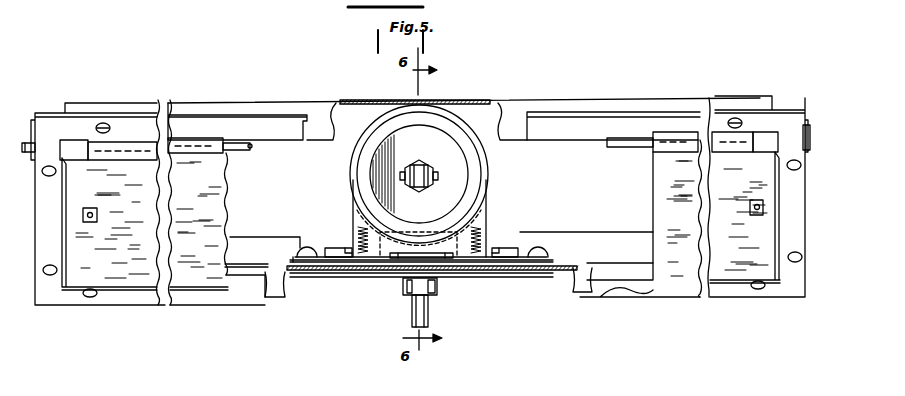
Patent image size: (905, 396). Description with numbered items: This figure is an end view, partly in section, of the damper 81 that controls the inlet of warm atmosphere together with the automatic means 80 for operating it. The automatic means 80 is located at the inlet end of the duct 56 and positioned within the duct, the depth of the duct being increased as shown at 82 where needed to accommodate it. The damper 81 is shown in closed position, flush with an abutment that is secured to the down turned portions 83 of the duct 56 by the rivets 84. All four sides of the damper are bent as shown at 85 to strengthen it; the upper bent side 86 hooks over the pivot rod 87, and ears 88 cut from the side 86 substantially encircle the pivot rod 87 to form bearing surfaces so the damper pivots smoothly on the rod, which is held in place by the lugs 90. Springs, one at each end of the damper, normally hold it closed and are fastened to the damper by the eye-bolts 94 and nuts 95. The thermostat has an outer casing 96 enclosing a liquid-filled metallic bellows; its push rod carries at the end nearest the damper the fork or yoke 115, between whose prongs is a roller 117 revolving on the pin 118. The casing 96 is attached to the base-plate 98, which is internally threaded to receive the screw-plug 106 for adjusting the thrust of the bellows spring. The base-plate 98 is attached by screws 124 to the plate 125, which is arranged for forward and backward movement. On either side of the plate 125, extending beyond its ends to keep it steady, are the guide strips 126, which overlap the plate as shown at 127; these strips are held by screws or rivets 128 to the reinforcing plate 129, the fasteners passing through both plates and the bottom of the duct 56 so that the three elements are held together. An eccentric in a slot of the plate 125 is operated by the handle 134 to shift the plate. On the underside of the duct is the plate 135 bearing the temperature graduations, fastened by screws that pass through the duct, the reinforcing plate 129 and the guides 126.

The duct 56 is at (465, 100).
The automatic means 80 is at (407, 106).
The damper 81 is at (138, 277).
The increased depth portion 82 is at (278, 123).
The down turned portions 83 is at (322, 110).
The rivets 84 is at (105, 123).
The bent sides 85 is at (62, 277).
The upper bent side 86 is at (193, 147).
The pivot rod 87 is at (243, 150).
The ears 88 is at (60, 140).
The lugs 90 is at (31, 125).
The eye-bolts 94 is at (97, 213).
The nuts 95 is at (91, 220).
The outer casing 96 is at (493, 160).
The base-plate 98 is at (357, 158).
The screw-plug 106 is at (460, 180).
The fork or yoke 115 is at (418, 165).
The roller 117 is at (420, 192).
The pin 118 is at (400, 183).
The screws 124 is at (475, 272).
The plate 125 is at (397, 275).
The guide strips 126 is at (295, 253).
The overlap 127 is at (333, 250).
The screws or rivets 128 is at (312, 248).
The reinforcing plate 129 is at (315, 278).
The handle 134 is at (430, 317).
The plate 135 is at (345, 278).